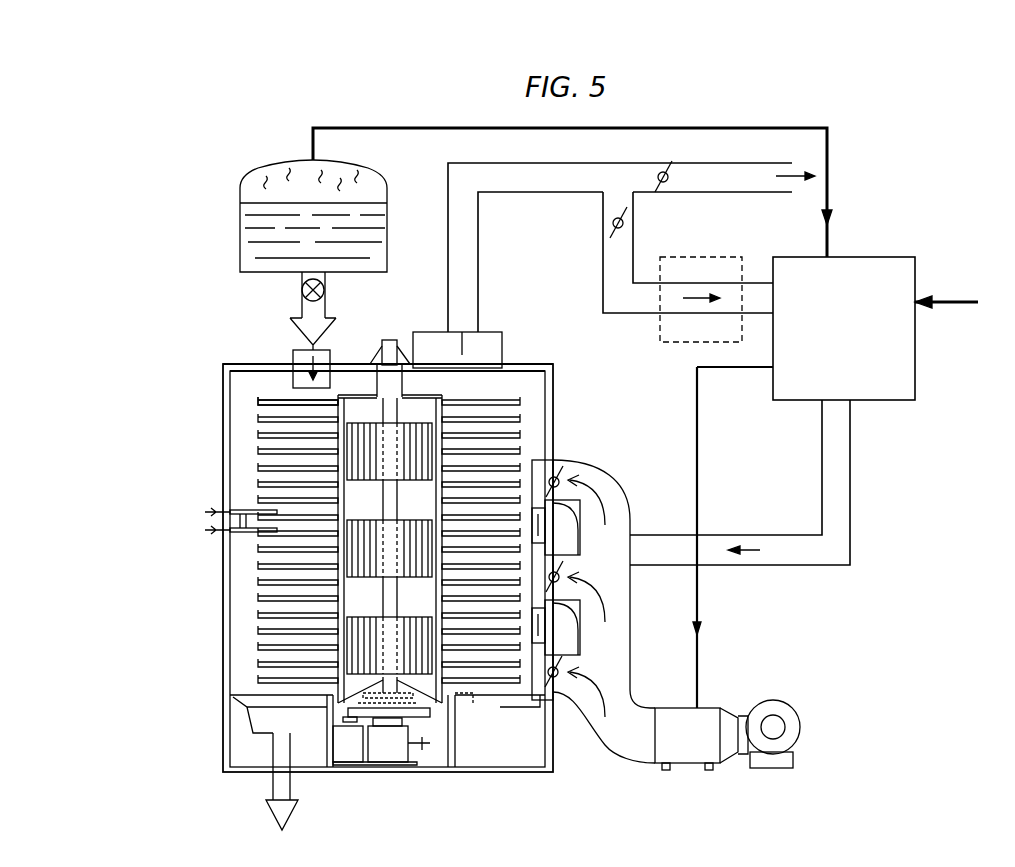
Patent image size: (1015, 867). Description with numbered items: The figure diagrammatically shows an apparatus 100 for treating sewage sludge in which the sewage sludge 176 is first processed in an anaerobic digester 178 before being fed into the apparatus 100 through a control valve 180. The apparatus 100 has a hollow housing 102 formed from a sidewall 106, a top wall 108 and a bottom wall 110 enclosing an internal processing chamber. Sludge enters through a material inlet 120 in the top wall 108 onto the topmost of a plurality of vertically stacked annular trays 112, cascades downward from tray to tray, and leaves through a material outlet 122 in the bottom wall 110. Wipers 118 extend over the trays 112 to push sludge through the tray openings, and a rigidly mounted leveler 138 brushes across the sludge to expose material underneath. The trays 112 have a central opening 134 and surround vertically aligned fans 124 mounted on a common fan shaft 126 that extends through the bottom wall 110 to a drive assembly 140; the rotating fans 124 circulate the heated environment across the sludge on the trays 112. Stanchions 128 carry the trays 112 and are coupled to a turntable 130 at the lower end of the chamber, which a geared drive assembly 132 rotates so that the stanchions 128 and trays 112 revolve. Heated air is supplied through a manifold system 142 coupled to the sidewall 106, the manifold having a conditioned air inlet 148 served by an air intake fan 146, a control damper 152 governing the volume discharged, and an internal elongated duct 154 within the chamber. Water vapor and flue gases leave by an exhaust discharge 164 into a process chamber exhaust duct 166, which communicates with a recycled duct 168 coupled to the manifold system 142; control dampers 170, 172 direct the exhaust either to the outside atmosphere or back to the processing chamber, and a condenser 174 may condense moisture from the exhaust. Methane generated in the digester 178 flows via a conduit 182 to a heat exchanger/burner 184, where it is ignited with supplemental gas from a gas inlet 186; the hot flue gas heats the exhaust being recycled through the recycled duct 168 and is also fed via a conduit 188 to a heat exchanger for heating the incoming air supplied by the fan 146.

The apparatus 100 is at (163, 383).
The hollow housing 102 is at (230, 420).
The sidewall 106 is at (228, 675).
The top wall 108 is at (548, 367).
The bottom wall 110 is at (522, 710).
The trays 112 is at (522, 421).
The wipers 118 is at (212, 512).
The material inlet 120 is at (293, 362).
The material outlet 122 is at (273, 745).
The fans 124 is at (411, 482).
The fan shaft 126 is at (383, 497).
The stanchion 128 is at (430, 392).
The turntable 130 is at (473, 705).
The drive assembly 132 is at (410, 762).
The central opening 134 is at (338, 402).
The leveler 138 is at (212, 531).
The drive assembly 140 is at (345, 748).
The manifold system 142 is at (632, 656).
The air intake fan 146 is at (795, 752).
The conditioned air inlet 148 is at (683, 770).
The control damper 152 is at (556, 468).
The internal elongated duct 154 is at (535, 460).
The exhaust discharge 164 is at (502, 352).
The process chamber exhaust duct 166 is at (562, 163).
The recycled duct 168 is at (850, 505).
The control damper 170 is at (662, 170).
The control damper 172 is at (630, 225).
The condenser 174 is at (738, 257).
The sewage sludge 176 is at (245, 222).
The anaerobic digester 178 is at (240, 258).
The control valve 180 is at (302, 293).
The conduit 182 is at (746, 128).
The heat exchanger/burner 184 is at (866, 257).
The gas inlet 186 is at (958, 302).
The conduit 188 is at (700, 615).